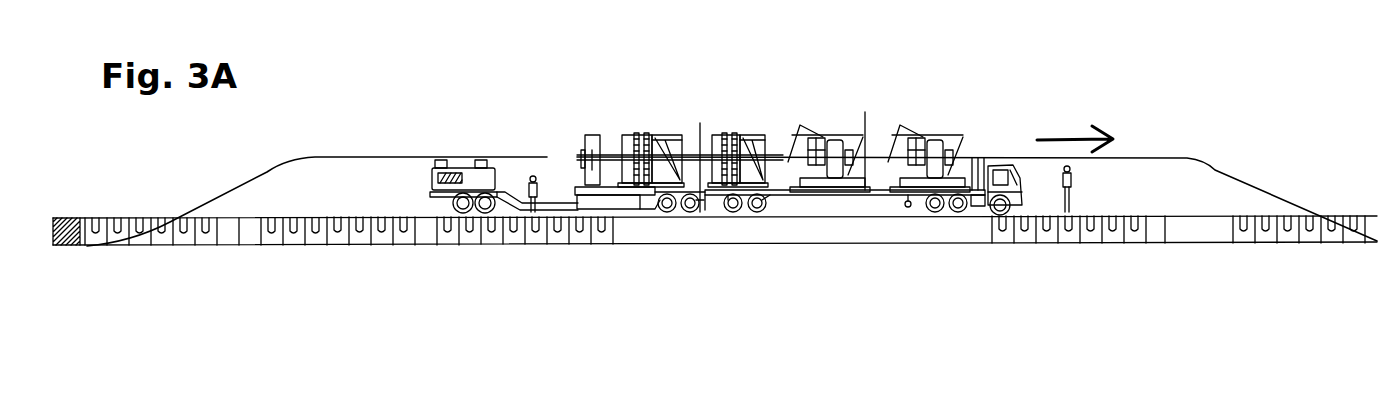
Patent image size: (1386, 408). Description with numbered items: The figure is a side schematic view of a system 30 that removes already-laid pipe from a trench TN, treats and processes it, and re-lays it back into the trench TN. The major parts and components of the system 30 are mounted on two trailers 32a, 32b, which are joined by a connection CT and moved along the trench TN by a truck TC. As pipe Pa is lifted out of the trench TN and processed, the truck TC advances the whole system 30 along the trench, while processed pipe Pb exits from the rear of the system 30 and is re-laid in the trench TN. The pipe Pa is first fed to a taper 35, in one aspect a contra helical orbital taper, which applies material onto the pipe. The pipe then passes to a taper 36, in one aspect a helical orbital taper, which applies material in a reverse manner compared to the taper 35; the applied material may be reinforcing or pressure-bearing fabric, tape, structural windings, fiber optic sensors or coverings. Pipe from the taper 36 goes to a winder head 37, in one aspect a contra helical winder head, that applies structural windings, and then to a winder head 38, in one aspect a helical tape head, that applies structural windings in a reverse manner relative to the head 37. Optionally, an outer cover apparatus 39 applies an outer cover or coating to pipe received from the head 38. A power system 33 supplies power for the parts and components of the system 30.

The system 30 is at (584, 115).
The power system 33 is at (452, 170).
The outer cover apparatus 39 is at (587, 137).
The winder head 38 is at (678, 182).
The winder head 37 is at (750, 143).
The taper 36 is at (840, 147).
The taper 35 is at (948, 137).
The trailer 32a is at (857, 193).
The trailer 32b is at (620, 207).
The truck TC is at (1003, 163).
The connection CT is at (703, 200).
The pipe Pa is at (1227, 182).
The processed pipe Pb is at (266, 174).
The trench TN is at (150, 240).